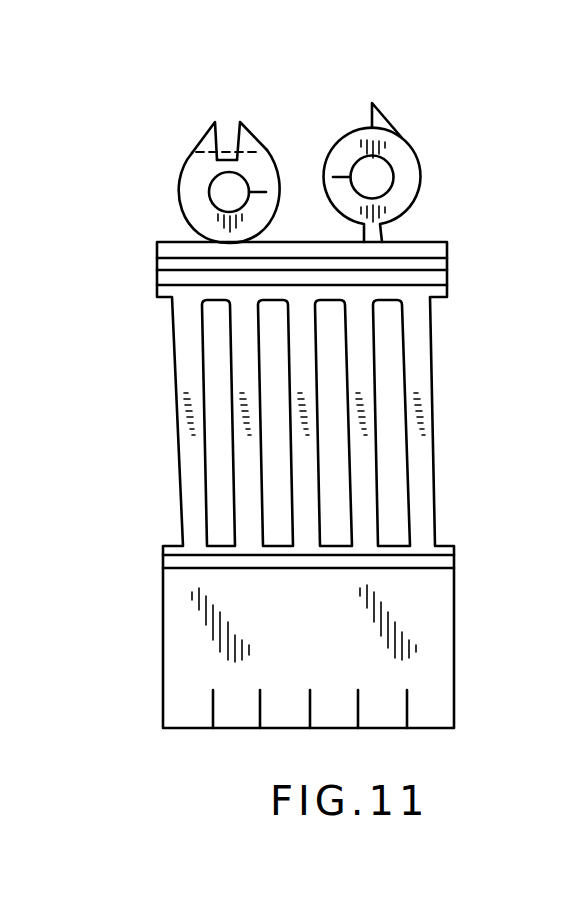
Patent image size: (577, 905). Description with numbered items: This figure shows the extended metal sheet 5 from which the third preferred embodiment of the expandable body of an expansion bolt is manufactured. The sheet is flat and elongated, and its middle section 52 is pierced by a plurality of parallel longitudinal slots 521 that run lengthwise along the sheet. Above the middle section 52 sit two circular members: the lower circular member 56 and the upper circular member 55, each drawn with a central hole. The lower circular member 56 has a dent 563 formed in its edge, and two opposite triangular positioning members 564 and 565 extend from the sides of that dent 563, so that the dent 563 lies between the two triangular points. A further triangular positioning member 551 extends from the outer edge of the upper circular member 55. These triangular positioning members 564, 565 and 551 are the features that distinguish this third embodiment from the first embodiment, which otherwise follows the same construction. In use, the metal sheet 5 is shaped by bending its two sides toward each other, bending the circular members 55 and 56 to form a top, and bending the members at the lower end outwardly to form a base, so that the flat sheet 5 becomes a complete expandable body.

The metal sheet 5 is at (492, 349).
The middle section 52 is at (450, 465).
The longitudinal slot 521 is at (220, 457).
The upper circular member 55 is at (422, 173).
The triangular positioning member 551 is at (379, 116).
The lower circular member 56 is at (192, 198).
The dent 563 is at (223, 147).
The triangular positioning member 564 is at (253, 147).
The triangular positioning member 565 is at (203, 147).